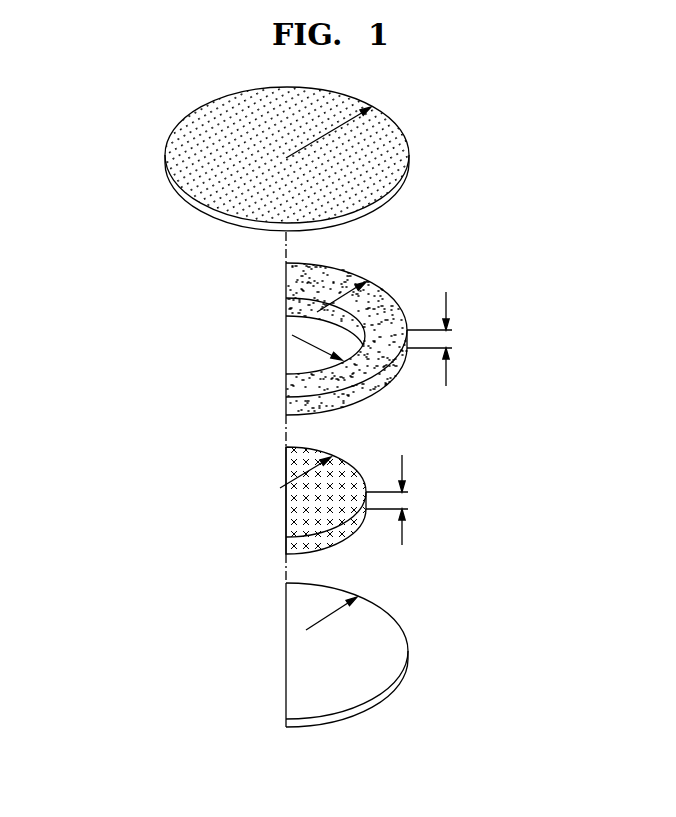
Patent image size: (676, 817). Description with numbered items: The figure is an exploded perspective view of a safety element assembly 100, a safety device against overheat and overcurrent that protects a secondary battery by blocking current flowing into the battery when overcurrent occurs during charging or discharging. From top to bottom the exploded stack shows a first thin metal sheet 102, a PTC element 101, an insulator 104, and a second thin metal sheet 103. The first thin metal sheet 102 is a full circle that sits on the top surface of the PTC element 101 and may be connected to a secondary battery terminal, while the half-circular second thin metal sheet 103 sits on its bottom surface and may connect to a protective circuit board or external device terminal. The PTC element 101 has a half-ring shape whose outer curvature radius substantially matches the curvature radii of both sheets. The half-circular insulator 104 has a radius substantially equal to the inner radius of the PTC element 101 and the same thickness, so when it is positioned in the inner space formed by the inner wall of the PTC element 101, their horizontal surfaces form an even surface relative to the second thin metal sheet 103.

The safety element assembly 100 is at (130, 111).
The PTC element 101 is at (378, 294).
The first thin metal sheet 102 is at (410, 154).
The second thin metal sheet 103 is at (408, 651).
The insulator 104 is at (354, 476).